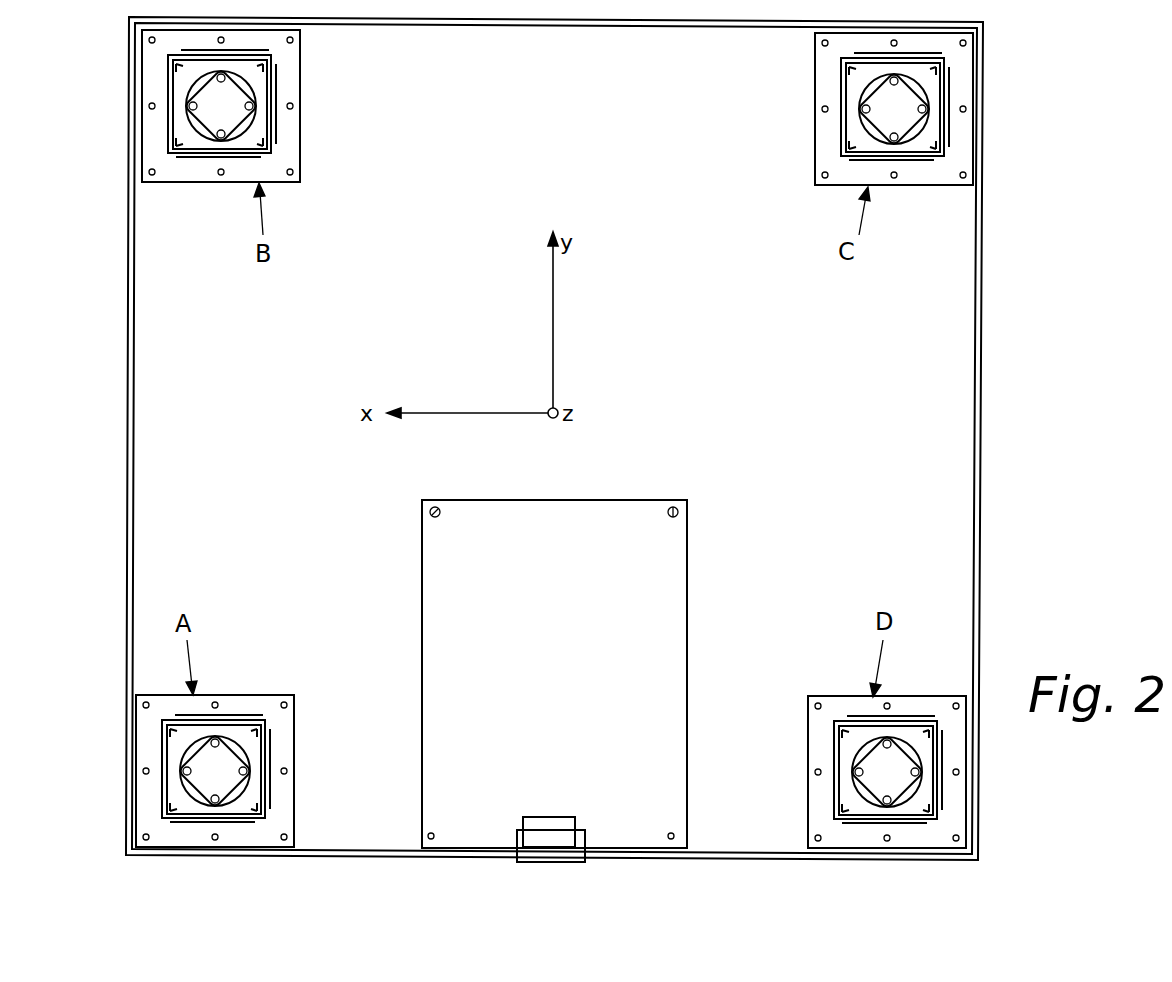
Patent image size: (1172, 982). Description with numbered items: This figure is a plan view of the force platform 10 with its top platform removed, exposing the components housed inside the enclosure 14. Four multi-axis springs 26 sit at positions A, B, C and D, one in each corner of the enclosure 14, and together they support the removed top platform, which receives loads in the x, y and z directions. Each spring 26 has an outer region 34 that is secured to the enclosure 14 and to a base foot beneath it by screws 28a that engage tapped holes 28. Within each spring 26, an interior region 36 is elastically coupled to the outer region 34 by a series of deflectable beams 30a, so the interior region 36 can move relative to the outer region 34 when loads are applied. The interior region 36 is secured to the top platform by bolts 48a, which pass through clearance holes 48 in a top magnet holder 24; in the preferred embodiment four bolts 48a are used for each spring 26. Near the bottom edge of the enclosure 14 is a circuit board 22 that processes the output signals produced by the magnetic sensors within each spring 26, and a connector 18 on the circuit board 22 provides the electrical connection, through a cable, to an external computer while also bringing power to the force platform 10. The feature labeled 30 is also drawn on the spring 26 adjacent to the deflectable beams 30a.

The force platform 10 is at (1022, 169).
The enclosure 14 is at (983, 348).
The connector 18 is at (575, 862).
The circuit board 22 is at (660, 573).
The top magnet holder 24 is at (201, 762).
The multi-axis spring 26 is at (223, 740).
The tapped holes 28 is at (261, 766).
The screws 28a is at (321, 765).
The second bracket 30 is at (243, 807).
The deflectable beams 30a is at (270, 818).
The outer region 34 is at (91, 771).
The interior region 36 is at (151, 741).
The clearance holes 48 is at (148, 771).
The bolts 48a is at (110, 751).